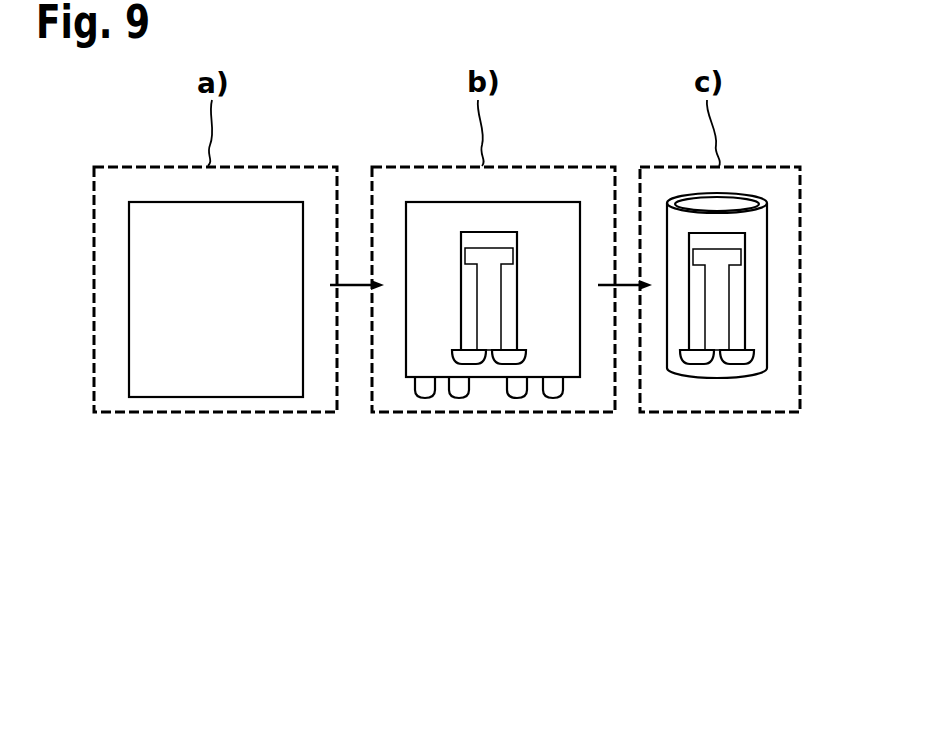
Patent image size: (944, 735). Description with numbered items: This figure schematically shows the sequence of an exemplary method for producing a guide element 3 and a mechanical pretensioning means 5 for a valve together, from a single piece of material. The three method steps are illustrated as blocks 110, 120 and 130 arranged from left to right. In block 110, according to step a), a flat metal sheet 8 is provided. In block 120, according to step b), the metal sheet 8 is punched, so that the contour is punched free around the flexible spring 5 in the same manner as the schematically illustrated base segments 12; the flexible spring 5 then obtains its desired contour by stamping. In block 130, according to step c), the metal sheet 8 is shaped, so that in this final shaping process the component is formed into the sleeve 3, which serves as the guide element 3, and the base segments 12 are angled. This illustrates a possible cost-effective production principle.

The block 110 is at (210, 413).
The metal sheet 8 is at (140, 238).
The block 120 is at (485, 413).
The mechanical pretensioning means 5 is at (474, 259).
The base segments 12 is at (428, 399).
The block 130 is at (720, 413).
The guide element 3 is at (758, 238).